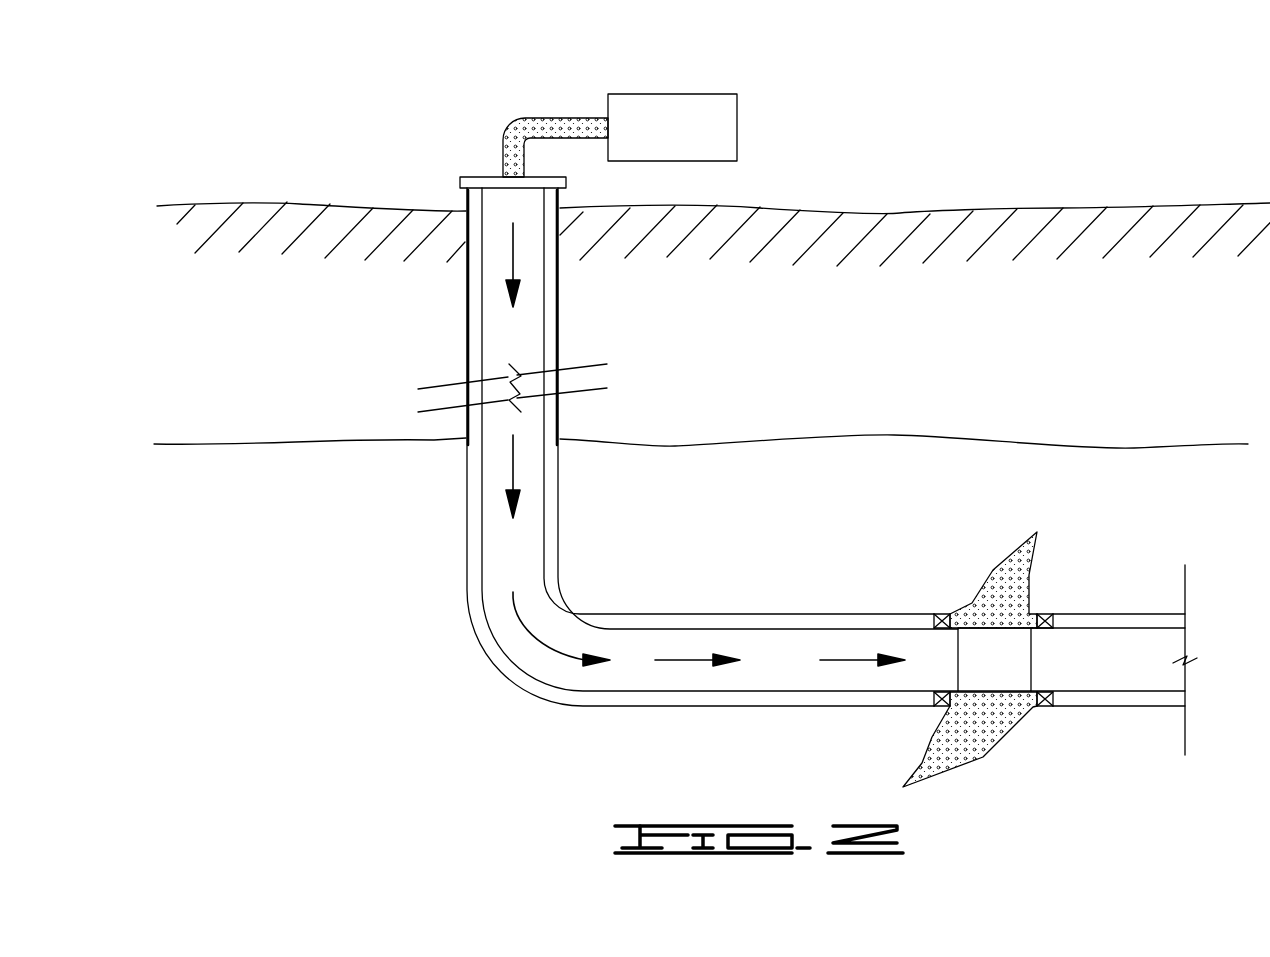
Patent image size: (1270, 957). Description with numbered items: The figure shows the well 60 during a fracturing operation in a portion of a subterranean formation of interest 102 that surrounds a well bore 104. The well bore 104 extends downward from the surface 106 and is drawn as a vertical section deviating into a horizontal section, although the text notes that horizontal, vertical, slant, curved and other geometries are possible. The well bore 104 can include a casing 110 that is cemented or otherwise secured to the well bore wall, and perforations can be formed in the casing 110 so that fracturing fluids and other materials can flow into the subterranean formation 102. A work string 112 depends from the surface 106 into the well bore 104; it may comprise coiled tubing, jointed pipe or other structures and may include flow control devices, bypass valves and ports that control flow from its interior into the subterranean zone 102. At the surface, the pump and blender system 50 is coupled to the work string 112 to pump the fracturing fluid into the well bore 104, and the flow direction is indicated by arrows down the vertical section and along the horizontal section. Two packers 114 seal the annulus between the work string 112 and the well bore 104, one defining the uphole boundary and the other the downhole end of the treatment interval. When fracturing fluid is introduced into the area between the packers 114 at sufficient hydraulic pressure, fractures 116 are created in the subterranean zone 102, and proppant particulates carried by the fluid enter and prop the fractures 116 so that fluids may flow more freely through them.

The pump and blender system 50 is at (681, 141).
The well 60 is at (487, 693).
The subterranean formation 102 is at (905, 477).
The well bore 104 is at (476, 323).
The surface 106 is at (1113, 207).
The casing 110 is at (468, 363).
The work string 112 is at (482, 537).
The packers 114 is at (943, 612).
The fractures 116 is at (964, 640).